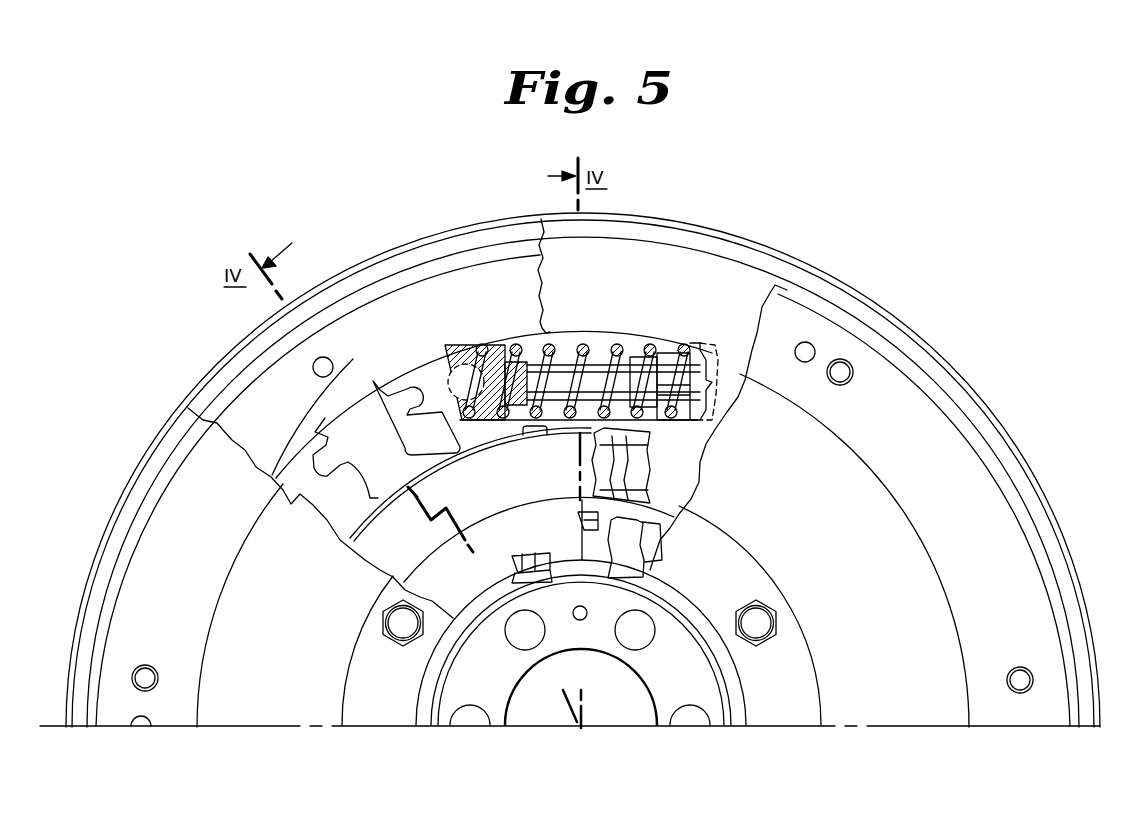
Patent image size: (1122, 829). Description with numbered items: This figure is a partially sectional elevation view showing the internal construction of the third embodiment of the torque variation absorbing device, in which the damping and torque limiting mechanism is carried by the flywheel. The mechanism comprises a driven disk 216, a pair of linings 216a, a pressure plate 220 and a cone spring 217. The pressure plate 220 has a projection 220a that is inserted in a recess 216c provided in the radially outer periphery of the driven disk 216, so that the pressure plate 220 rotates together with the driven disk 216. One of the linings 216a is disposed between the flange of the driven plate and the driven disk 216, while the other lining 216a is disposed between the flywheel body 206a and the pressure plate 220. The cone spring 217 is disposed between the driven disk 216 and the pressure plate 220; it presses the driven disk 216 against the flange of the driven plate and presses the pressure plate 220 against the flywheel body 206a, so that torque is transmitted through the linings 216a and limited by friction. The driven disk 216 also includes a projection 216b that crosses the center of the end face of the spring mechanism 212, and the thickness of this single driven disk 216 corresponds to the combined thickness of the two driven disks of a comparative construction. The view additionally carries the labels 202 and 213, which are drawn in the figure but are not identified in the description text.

The brake drum 202 is at (750, 290).
The flywheel body 206a is at (212, 563).
The spring mechanism 212 is at (554, 305).
The spring shaft 213 is at (511, 345).
The driven disk 216 is at (387, 451).
The lining 216a is at (470, 482).
The projection 216b is at (353, 417).
The recess 216c is at (409, 408).
The cone spring 217 is at (605, 452).
The pressure plate 220 is at (605, 470).
The projection 220a is at (475, 445).